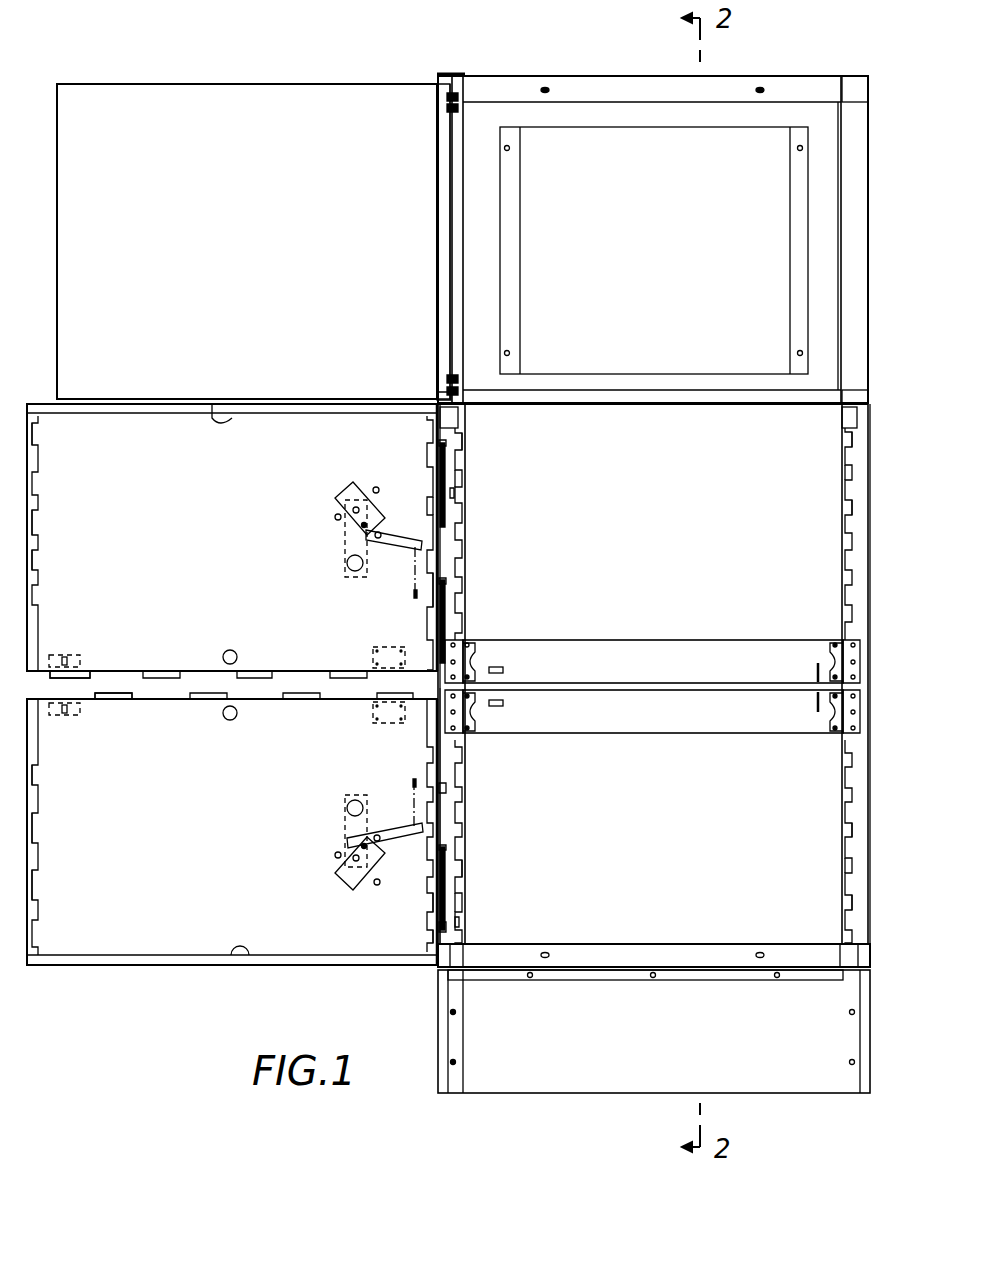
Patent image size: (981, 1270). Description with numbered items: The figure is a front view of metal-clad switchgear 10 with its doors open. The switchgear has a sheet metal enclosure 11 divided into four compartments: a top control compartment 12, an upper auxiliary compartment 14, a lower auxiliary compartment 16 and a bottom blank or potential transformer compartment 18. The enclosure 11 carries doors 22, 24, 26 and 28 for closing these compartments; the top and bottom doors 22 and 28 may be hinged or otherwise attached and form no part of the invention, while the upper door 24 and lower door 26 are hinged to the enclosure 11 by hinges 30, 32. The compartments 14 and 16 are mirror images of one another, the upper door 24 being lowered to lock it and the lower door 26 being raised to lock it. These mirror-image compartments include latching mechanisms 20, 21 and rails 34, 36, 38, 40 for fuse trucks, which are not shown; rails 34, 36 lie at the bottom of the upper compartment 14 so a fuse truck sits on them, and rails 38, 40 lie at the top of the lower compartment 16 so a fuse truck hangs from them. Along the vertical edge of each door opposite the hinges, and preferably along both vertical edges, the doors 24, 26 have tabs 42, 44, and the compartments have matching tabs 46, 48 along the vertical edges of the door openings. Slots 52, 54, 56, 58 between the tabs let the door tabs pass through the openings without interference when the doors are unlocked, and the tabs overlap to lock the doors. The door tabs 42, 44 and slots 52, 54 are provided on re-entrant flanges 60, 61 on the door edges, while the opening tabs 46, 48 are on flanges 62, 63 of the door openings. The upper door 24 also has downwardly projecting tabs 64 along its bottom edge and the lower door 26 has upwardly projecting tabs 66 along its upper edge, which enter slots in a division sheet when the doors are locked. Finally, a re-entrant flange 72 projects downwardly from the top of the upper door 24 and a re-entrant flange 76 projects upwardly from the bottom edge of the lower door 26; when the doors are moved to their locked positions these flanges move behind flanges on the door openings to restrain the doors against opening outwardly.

The metal-clad switchgear 10 is at (322, 56).
The sheet metal enclosure 11 is at (567, 76).
The top control compartment 12 is at (816, 205).
The upper auxiliary compartment 14 is at (683, 522).
The lower auxiliary compartment 16 is at (718, 822).
The bottom blank compartment 18 is at (756, 1073).
The latching mechanism 20 is at (338, 543).
The latching mechanism 21 is at (342, 825).
The top door 22 is at (210, 97).
The upper door 24 is at (28, 475).
The lower door 26 is at (28, 918).
The bottom door 28 is at (529, 1073).
The hinge 30 is at (437, 462).
The hinge 32 is at (440, 875).
The rail 34 is at (477, 640).
The rail 36 is at (841, 640).
The rail 38 is at (483, 733).
The rail 40 is at (833, 733).
The tab 42 is at (425, 598).
The tab 44 is at (38, 447).
The tab 46 is at (845, 458).
The tab 48 is at (463, 450).
The slot 52 is at (427, 508).
The slot 54 is at (35, 540).
The slot 56 is at (843, 470).
The slot 58 is at (460, 472).
The re-entrant flange 60 is at (426, 773).
The re-entrant flange 61 is at (35, 521).
The flange 62 is at (855, 525).
The flange 63 is at (437, 398).
The downwardly projecting tab 64 is at (76, 683).
The upwardly projecting tab 66 is at (120, 696).
The re-entrant flange 72 is at (220, 420).
The re-entrant flange 76 is at (234, 962).